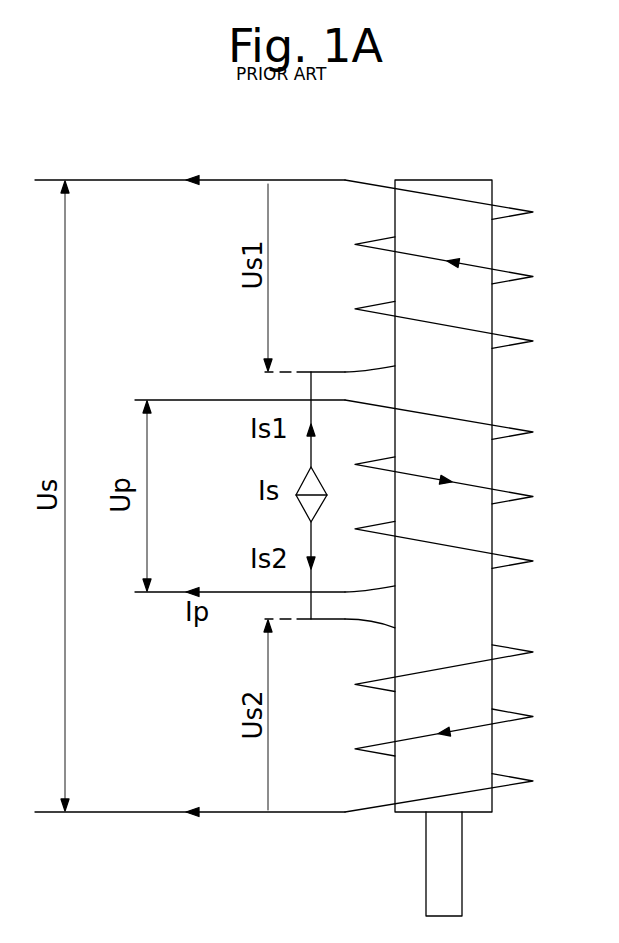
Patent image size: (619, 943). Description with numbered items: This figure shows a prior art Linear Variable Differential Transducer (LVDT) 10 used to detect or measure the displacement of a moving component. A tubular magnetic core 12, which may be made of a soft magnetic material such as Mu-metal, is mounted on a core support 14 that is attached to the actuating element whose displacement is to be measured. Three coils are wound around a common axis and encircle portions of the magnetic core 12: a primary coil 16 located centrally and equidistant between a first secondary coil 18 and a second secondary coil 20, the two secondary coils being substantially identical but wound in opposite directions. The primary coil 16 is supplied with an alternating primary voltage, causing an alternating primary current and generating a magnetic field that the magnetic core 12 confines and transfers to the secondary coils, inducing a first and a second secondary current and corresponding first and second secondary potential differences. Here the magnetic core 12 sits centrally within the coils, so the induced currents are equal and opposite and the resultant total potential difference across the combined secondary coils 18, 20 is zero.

The Linear Variable Differential Transducer (LVDT) 10 is at (469, 498).
The magnetic core 12 is at (492, 186).
The core support 14 is at (462, 871).
The primary coil 16 is at (512, 425).
The first secondary coil 18 is at (516, 272).
The second secondary coil 20 is at (515, 648).